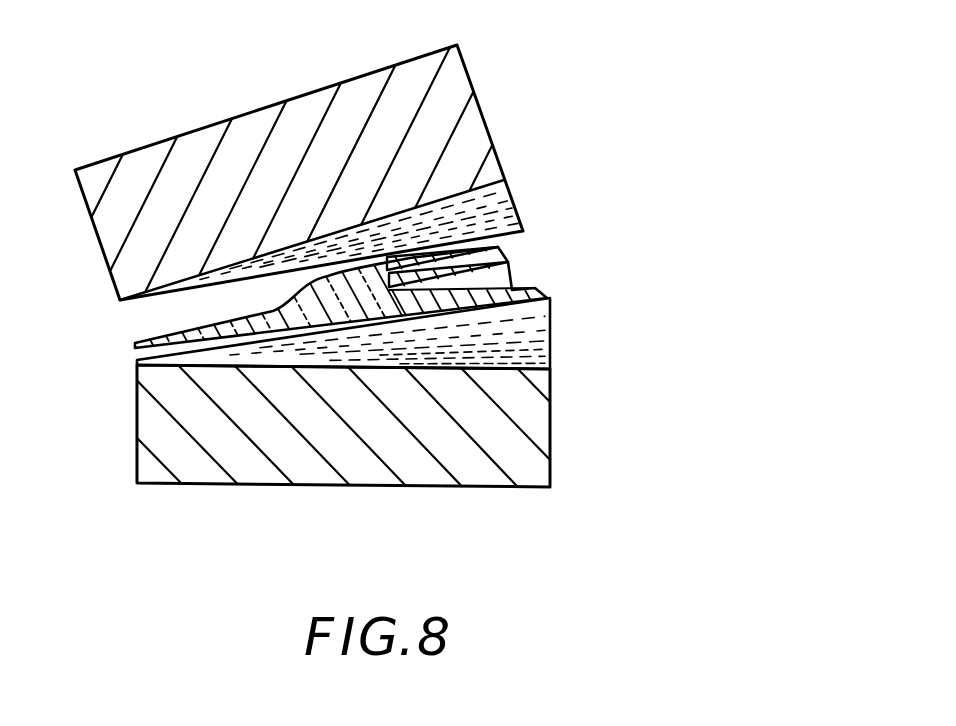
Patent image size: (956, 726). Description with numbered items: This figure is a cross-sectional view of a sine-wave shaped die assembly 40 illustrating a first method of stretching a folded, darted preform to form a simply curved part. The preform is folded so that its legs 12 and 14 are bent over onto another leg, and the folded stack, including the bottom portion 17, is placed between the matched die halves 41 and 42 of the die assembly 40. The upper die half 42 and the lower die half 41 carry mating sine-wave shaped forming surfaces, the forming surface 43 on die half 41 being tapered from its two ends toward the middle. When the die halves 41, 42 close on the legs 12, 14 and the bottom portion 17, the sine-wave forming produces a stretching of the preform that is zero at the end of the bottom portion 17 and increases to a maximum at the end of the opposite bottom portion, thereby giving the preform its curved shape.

The die assembly 40 is at (97, 234).
The die half 41 is at (137, 422).
The die half 42 is at (497, 186).
The forming surface 43 is at (530, 368).
The leg 12 is at (500, 248).
The leg 14 is at (509, 263).
The bottom portion 17 is at (535, 288).